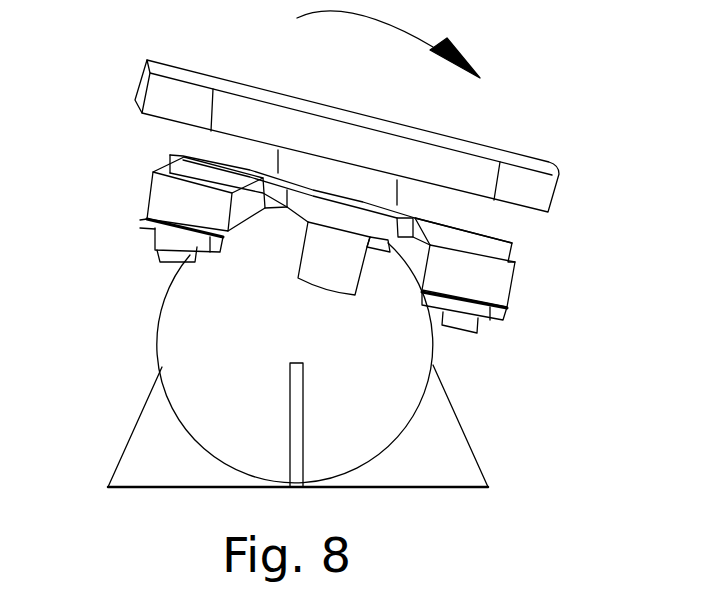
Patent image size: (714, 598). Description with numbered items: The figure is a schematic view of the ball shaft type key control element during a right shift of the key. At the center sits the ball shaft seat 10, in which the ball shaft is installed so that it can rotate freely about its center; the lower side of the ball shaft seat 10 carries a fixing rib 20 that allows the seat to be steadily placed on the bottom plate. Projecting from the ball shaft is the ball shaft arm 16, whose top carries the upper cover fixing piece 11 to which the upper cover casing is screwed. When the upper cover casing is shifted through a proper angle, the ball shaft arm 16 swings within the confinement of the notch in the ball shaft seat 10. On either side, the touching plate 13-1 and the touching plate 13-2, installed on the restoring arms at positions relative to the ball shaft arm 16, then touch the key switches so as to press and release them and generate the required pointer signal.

The ball shaft seat 10 is at (173, 332).
The upper cover fixing piece 11 is at (452, 138).
The touching plate 13-1 is at (155, 202).
The touching plate 13-2 is at (500, 278).
The ball shaft arm 16 is at (408, 189).
The fixing rib 20 is at (143, 435).